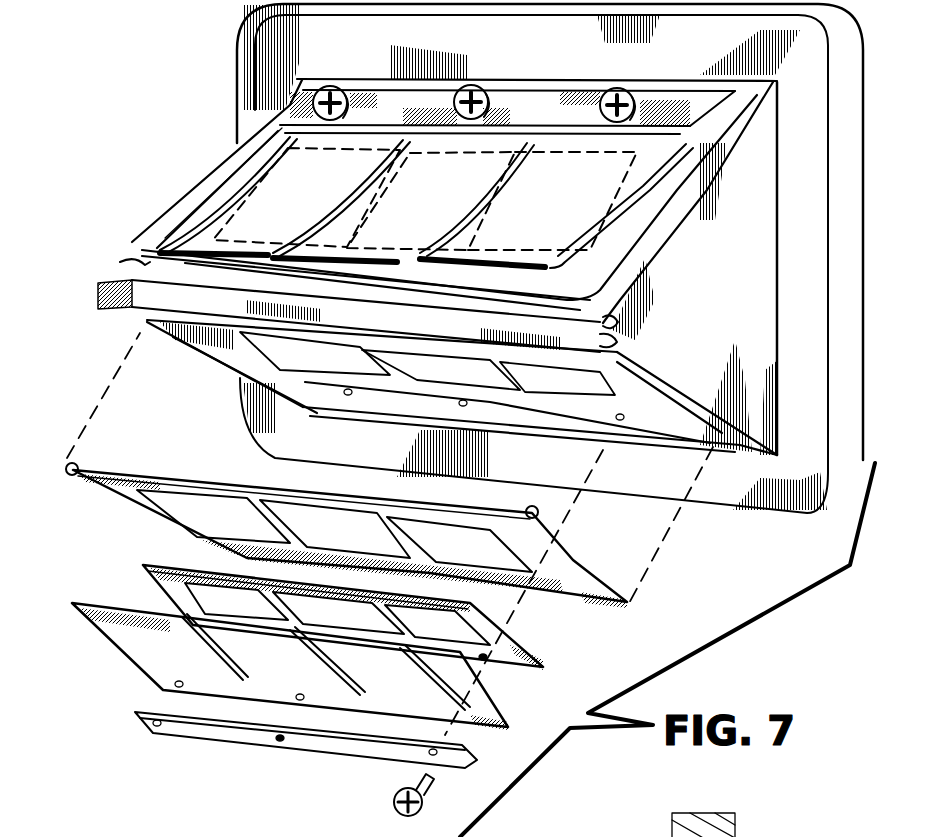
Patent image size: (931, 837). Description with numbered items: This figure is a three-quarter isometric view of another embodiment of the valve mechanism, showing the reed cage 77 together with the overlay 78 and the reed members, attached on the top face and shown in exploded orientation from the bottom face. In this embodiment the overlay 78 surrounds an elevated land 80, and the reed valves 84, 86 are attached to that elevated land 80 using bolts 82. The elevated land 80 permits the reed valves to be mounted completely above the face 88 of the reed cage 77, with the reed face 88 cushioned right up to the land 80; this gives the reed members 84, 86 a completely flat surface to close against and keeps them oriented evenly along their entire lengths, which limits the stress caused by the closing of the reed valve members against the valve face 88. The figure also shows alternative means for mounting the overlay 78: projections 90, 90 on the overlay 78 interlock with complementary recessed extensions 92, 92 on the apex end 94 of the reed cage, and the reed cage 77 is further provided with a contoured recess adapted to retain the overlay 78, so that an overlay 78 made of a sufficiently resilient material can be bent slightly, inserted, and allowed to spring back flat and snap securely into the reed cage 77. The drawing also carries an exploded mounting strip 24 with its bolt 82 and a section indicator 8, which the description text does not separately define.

The section line 8- 8 is at (157, 453).
The mounting strip 24 is at (297, 107).
The reed cage 77 is at (172, 213).
The overlay 78 is at (693, 160).
The elevated land 80 is at (777, 100).
The bolts 82 is at (333, 87).
The reed valve 84 is at (233, 182).
The reed valve 86 is at (173, 322).
The face 88 is at (193, 193).
The projections 90 is at (122, 267).
The recessed extensions 92 is at (127, 315).
The apex end 94 is at (210, 170).